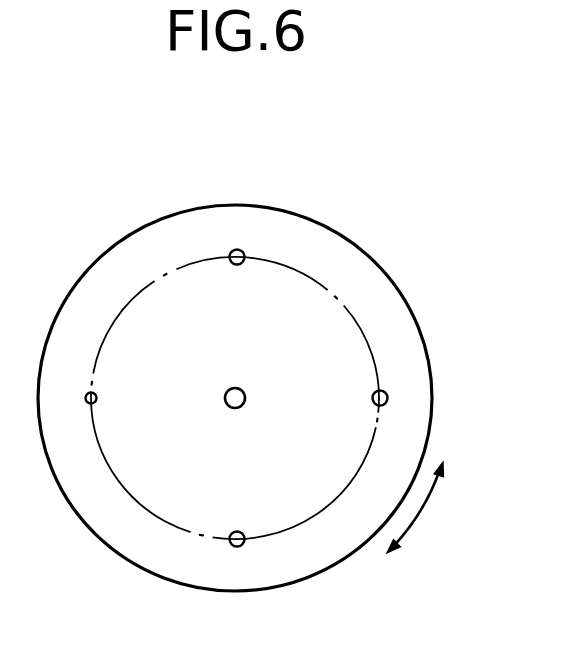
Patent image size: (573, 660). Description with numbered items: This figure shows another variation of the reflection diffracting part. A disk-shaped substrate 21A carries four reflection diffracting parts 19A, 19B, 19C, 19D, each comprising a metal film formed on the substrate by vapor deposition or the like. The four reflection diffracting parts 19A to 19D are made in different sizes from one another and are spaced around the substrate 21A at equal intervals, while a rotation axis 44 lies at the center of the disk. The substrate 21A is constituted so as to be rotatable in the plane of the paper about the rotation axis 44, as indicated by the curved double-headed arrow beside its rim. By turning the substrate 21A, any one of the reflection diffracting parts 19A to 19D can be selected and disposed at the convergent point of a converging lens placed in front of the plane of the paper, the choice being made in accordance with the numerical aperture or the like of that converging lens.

The disk-shaped substrate 21A is at (392, 297).
The reflection diffracting part 19A is at (97, 398).
The reflection diffracting part 19B is at (237, 249).
The reflection diffracting part 19C is at (388, 398).
The reflection diffracting part 19D is at (237, 547).
The rotation axis 44 is at (270, 382).